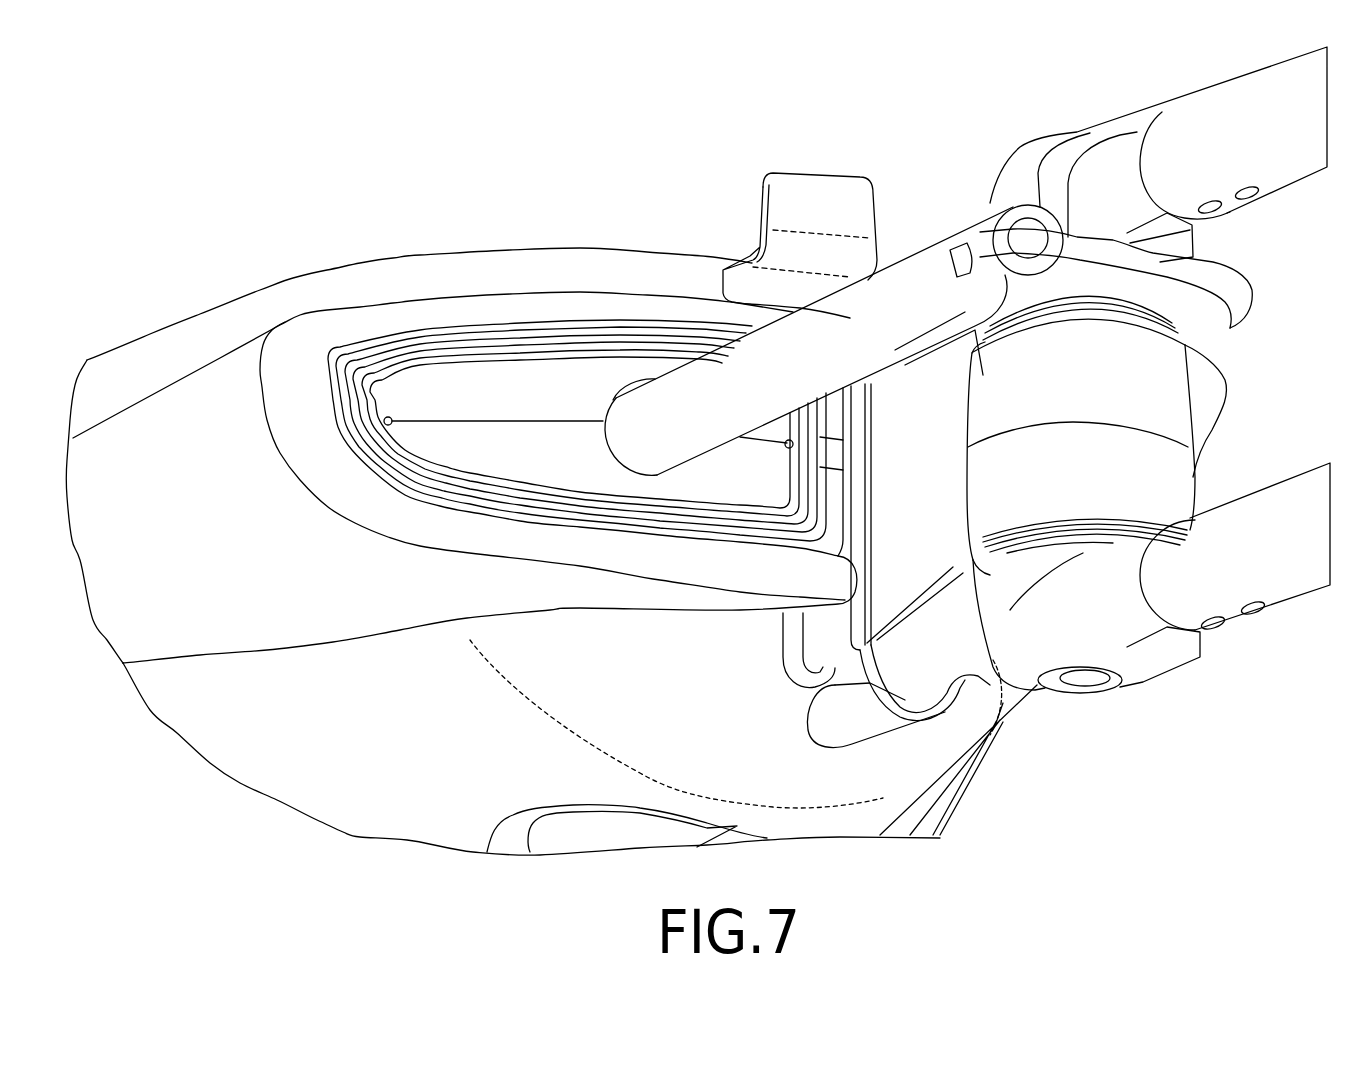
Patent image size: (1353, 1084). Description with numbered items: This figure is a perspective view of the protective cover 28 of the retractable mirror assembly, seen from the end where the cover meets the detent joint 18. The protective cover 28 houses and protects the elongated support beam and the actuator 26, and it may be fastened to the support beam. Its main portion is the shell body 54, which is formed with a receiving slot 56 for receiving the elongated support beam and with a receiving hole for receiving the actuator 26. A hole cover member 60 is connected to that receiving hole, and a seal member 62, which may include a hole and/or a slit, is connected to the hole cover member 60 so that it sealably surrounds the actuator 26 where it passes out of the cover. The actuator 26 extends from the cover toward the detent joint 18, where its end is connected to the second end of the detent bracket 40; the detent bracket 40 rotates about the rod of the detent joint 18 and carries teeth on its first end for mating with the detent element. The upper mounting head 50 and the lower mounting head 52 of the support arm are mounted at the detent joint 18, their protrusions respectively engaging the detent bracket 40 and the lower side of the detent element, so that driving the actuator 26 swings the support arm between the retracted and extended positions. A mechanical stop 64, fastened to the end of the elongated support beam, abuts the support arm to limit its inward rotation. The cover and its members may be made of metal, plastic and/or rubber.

The detent joint 18 is at (1220, 438).
The actuator 26 is at (907, 276).
The protective cover 28 is at (363, 790).
The detent bracket 40 is at (1236, 279).
The upper mounting head 50 is at (1073, 130).
The lower mounting head 52 is at (1137, 673).
The shell body 54 is at (463, 830).
The receiving slot 56 is at (925, 688).
The hole cover member 60 is at (217, 397).
The seal member 62 is at (413, 357).
The mechanical stop 64 is at (805, 175).